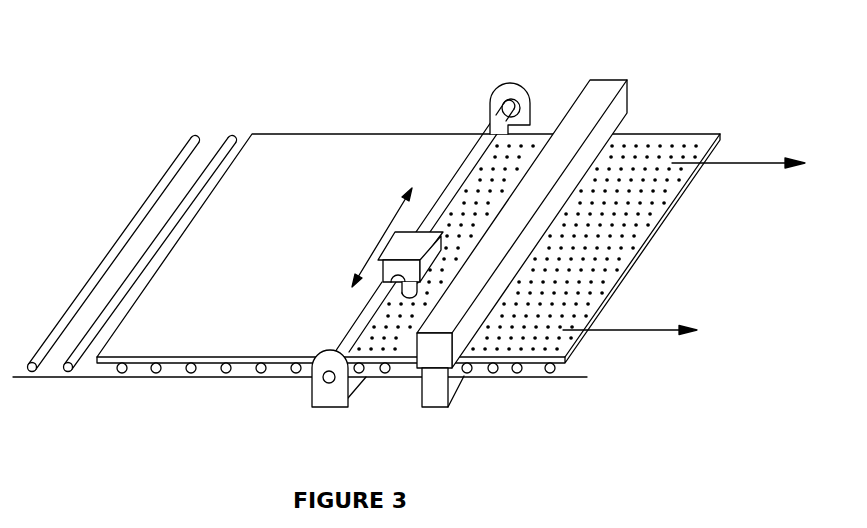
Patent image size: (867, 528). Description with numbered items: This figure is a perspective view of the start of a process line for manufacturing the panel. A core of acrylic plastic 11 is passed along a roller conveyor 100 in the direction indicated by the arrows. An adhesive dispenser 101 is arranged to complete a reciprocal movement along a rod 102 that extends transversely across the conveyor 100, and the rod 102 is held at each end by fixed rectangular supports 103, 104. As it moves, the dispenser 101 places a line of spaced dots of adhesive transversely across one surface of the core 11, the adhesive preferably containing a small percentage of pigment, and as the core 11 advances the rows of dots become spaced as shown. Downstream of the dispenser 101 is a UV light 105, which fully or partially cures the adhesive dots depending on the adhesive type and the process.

The core of acrylic plastic 11 is at (277, 277).
The roller conveyor 100 is at (212, 377).
The adhesive dispenser 101 is at (400, 252).
The rod 102 is at (470, 162).
The fixed rectangular support 103 is at (525, 90).
The fixed rectangular support 104 is at (318, 392).
The UV light 105 is at (513, 221).